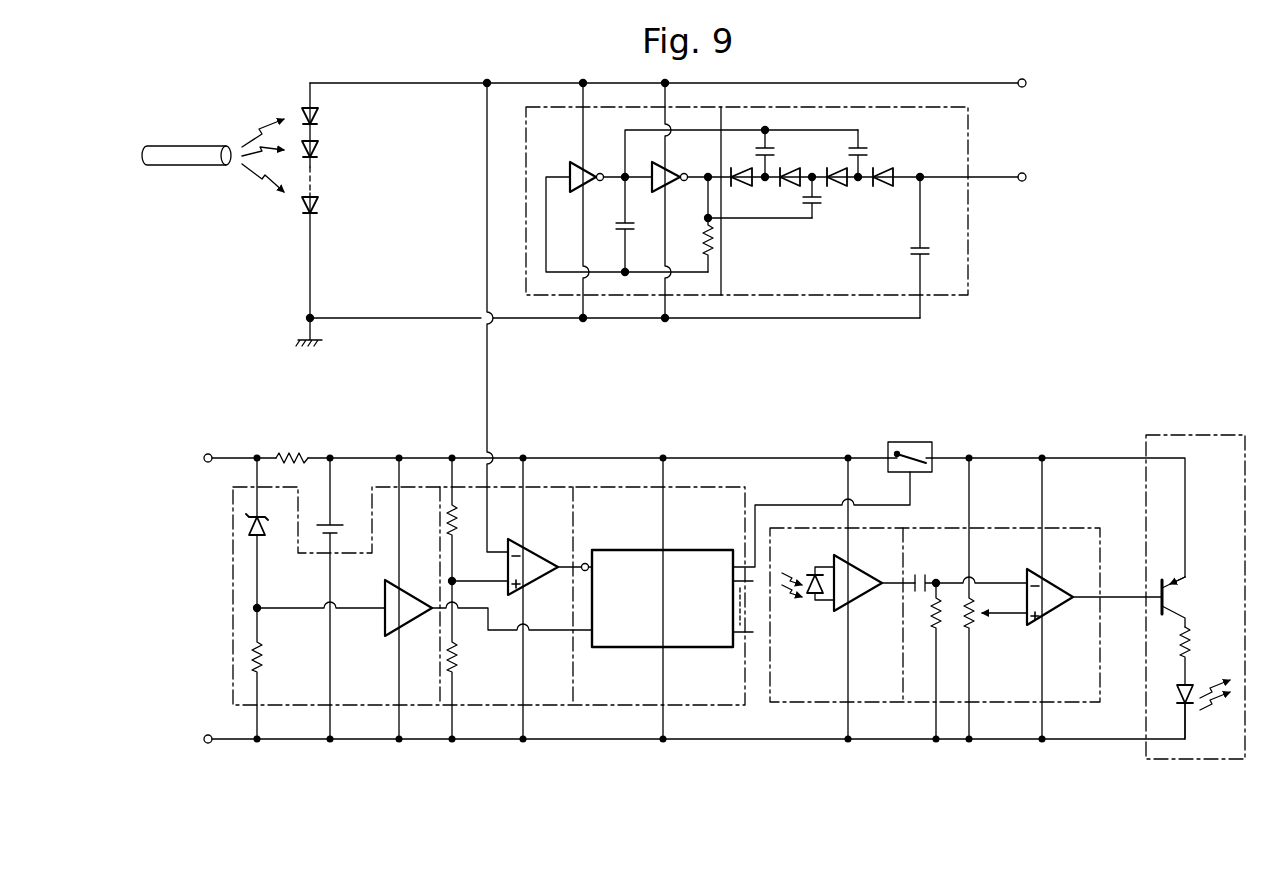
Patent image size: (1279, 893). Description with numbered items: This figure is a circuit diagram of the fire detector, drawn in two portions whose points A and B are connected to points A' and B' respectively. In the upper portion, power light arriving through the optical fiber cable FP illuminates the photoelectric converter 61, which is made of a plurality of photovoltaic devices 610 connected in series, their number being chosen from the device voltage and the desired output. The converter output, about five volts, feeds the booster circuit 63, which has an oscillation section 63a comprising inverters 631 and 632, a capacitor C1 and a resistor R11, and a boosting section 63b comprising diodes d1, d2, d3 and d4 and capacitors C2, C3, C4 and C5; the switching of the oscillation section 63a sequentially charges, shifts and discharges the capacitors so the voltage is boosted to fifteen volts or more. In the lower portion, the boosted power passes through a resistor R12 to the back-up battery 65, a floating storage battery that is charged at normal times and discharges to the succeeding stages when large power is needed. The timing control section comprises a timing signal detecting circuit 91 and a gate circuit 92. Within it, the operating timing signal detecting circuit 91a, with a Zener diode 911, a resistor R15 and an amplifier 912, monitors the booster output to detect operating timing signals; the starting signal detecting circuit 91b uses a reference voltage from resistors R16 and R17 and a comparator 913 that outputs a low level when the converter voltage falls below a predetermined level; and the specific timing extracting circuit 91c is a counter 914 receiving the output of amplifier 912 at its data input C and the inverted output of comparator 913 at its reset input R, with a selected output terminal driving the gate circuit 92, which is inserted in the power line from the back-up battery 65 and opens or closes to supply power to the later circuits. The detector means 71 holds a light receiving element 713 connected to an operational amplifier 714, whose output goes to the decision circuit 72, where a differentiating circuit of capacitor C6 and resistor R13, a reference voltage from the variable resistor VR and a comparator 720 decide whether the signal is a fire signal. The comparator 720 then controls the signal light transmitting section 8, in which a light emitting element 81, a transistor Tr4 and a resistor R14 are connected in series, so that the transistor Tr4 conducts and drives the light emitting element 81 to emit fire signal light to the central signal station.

The photoelectric converter 61 is at (340, 183).
The photovoltaic device 610 is at (320, 118).
The optical fiber cable for power light FP is at (188, 146).
The booster circuit 63 is at (893, 107).
The oscillation section 63a is at (693, 219).
The boosting section 63b is at (889, 241).
The inverter 631 is at (578, 164).
The inverter 632 is at (668, 170).
The capacitor C1 is at (614, 226).
The resistor R11 is at (700, 246).
The capacitor C2 is at (775, 152).
The capacitor C3 is at (870, 152).
The capacitor C4 is at (818, 205).
The capacitor C5 is at (912, 253).
The diode d1 is at (740, 193).
The diode d2 is at (783, 193).
The diode d3 is at (842, 193).
The diode d4 is at (885, 193).
The connection point A is at (1043, 84).
The connection point B is at (1043, 178).
The connection point A' is at (187, 459).
The connection point B' is at (187, 740).
The resistor R12 is at (291, 451).
The back-up battery 65 is at (344, 530).
The timing signal detecting circuit 91 is at (605, 487).
The operating timing signal detecting circuit 91a is at (390, 617).
The starting signal detecting circuit 91b is at (519, 617).
The specific timing extracting circuit 91c is at (751, 617).
The Zener diode 911 is at (246, 528).
The resistor R15 is at (264, 658).
The amplifier 912 is at (384, 624).
The resistor R16 is at (471, 519).
The resistor R17 is at (467, 658).
The comparator 913 is at (546, 553).
The counter 914 is at (696, 550).
The gate circuit 92 is at (912, 442).
The detector means 71 is at (935, 617).
The decision circuit 72 is at (1033, 617).
The light receiving element 713 is at (808, 600).
The operational amplifier 714 is at (868, 598).
The capacitor C6 is at (920, 575).
The resistor R13 is at (932, 616).
The variable resistor VR is at (978, 620).
The comparator 720 is at (1062, 580).
The signal light transmitting section 8 is at (1180, 435).
The transistor Tr4 is at (1170, 598).
The resistor R14 is at (1190, 640).
The light emitting element 81 is at (1195, 702).